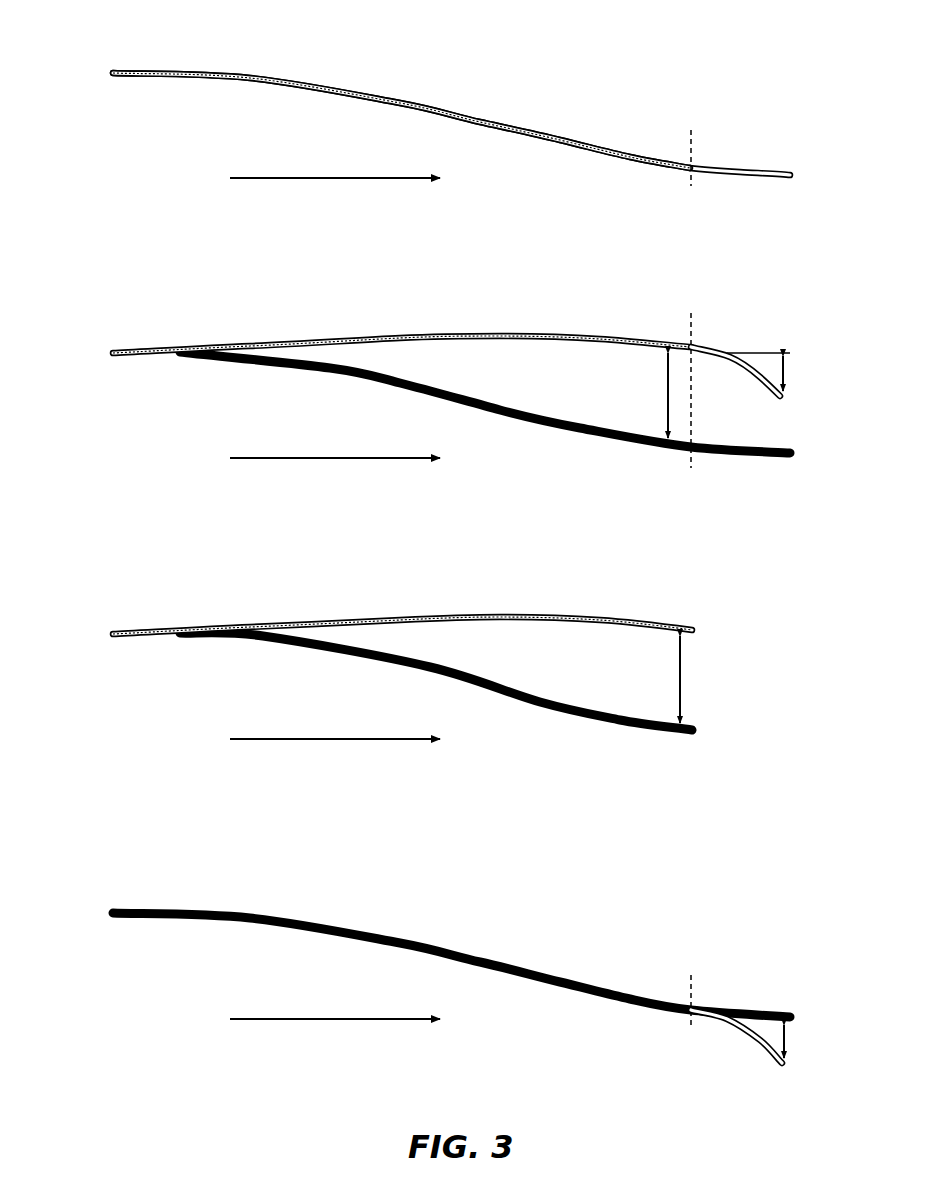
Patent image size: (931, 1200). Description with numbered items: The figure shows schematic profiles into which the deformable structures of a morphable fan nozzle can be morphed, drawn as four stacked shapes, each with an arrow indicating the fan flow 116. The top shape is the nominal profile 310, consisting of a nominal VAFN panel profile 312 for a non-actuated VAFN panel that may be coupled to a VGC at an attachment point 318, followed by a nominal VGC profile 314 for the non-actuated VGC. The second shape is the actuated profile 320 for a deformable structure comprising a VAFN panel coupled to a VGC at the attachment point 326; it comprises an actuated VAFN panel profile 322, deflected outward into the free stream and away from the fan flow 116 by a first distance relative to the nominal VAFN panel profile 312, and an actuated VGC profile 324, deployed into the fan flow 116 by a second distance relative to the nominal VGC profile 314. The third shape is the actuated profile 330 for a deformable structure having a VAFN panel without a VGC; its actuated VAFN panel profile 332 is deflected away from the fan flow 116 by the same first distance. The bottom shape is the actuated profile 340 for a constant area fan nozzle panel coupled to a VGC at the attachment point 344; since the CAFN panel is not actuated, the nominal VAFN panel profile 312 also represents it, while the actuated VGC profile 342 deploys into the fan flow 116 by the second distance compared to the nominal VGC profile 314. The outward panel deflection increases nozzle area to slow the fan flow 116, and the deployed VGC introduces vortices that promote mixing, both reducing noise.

The nominal profile 310 is at (121, 38).
The nominal VAFN panel profile 312 is at (622, 160).
The nominal VGC profile 314 is at (717, 177).
The fan flow 116 is at (255, 177).
The attachment point 318 is at (693, 143).
The actuated profile 320 is at (121, 317).
The actuated VAFN panel profile 322 is at (602, 335).
The actuated VGC profile 324 is at (743, 358).
The attachment point 326 is at (693, 327).
The actuated profile 330 is at (121, 598).
The actuated VAFN panel profile 332 is at (602, 615).
The actuated profile 340 is at (121, 878).
The actuated VGC profile 342 is at (770, 1058).
The attachment point 344 is at (693, 985).